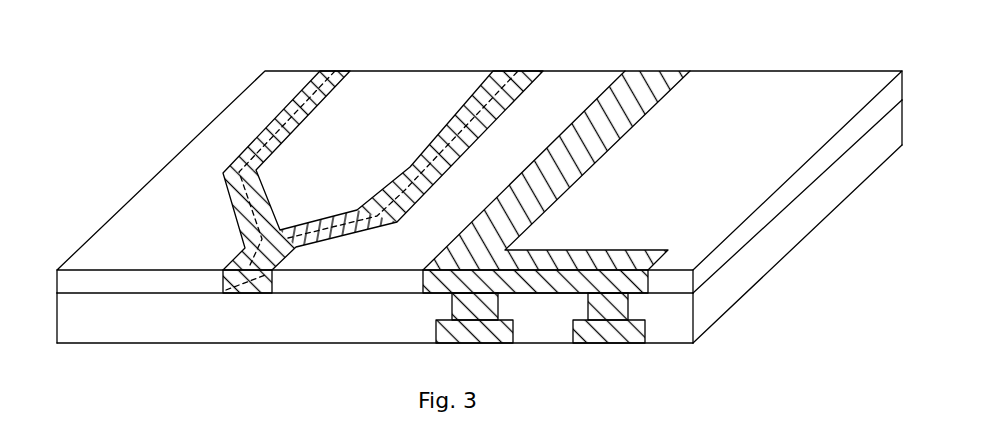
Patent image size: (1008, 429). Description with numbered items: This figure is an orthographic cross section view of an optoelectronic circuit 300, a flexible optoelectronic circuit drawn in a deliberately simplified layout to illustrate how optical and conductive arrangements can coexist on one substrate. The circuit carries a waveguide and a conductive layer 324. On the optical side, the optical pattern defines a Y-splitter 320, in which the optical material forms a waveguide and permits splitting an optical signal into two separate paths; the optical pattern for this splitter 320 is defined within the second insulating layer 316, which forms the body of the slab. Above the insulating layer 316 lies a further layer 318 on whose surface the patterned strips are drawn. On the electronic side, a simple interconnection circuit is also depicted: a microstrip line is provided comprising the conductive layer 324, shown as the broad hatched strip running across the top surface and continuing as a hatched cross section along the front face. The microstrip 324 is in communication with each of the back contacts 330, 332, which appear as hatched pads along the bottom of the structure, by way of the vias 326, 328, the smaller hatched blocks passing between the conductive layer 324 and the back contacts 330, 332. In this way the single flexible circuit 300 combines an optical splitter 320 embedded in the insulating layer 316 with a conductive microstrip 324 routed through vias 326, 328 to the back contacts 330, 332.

The optoelectronic circuit 300 is at (181, 62).
The second insulating layer 316 is at (790, 232).
The dielectric layer 318 is at (768, 88).
The Y-splitter 320 is at (512, 82).
The conductive layer 324 is at (632, 98).
The via 326 is at (648, 298).
The via 328 is at (450, 302).
The back contact 330 is at (497, 358).
The back contact 332 is at (633, 350).